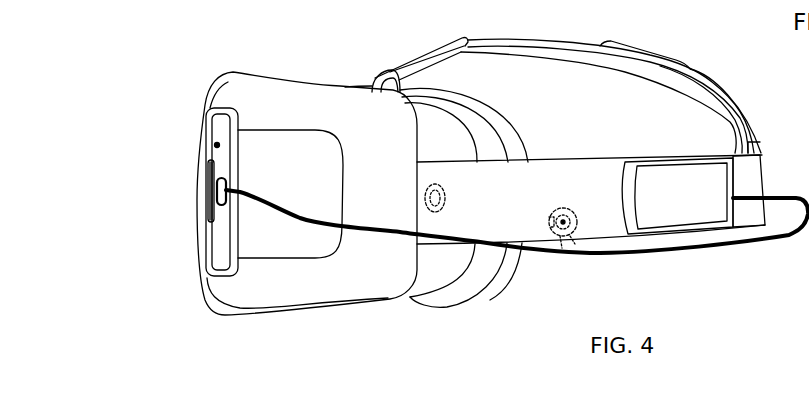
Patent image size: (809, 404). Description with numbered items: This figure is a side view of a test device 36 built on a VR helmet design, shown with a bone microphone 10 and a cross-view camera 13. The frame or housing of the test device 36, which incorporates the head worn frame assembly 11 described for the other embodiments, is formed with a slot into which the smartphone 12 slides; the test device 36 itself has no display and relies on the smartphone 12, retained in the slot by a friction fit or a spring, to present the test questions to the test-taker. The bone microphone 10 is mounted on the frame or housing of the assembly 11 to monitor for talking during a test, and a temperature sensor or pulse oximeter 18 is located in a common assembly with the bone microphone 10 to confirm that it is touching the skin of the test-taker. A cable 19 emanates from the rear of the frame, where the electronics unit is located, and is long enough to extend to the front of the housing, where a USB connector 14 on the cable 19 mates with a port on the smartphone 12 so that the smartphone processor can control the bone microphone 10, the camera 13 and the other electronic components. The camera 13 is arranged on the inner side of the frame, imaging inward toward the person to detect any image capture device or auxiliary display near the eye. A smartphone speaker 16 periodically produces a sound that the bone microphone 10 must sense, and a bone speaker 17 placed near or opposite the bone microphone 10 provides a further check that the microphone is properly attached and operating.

The bone microphone 10 is at (570, 241).
The head worn frame assembly 11 is at (388, 202).
The smartphone 12 is at (217, 240).
The cross-view camera 13 is at (435, 184).
The USB connector 14 is at (222, 178).
The smartphone speaker 16 is at (215, 144).
The bone speaker 17 is at (637, 235).
The temperature sensor or pulse oximeter 18 is at (561, 238).
The cable 19 is at (744, 247).
The test device 36 is at (359, 88).